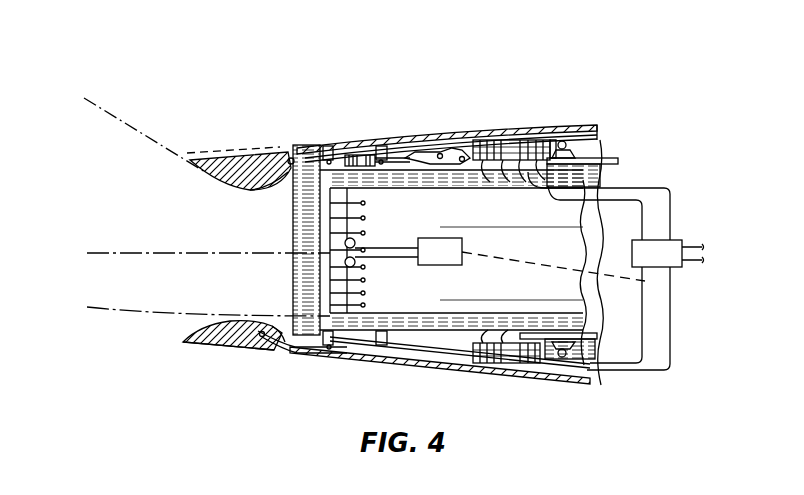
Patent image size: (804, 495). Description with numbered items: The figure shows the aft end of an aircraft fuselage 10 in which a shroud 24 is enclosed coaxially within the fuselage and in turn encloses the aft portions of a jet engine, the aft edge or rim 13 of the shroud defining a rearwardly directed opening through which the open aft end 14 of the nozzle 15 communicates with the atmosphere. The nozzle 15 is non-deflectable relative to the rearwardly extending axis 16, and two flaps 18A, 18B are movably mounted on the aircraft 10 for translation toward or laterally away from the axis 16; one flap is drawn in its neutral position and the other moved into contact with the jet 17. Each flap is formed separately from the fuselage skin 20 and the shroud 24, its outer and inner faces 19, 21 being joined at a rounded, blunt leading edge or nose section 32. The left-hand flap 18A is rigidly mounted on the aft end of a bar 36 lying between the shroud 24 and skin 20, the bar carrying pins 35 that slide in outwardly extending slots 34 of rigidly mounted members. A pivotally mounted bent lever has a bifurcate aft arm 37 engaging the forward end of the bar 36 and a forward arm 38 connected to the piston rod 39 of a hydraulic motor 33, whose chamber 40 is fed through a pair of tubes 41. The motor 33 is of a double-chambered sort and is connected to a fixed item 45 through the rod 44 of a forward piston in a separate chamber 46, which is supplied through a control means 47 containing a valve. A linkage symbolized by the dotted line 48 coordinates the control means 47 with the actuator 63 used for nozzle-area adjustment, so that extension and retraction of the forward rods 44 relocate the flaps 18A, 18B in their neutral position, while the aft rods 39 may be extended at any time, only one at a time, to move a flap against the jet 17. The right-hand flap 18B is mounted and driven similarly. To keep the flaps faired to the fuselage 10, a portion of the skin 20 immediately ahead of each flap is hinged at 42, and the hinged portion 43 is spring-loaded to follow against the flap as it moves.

The fuselage 10 is at (604, 92).
The aft edge or rim 13 is at (320, 206).
The open aft end of the nozzle 14 is at (326, 214).
The nozzle 15 is at (392, 293).
The rearwardly extending axis 16 is at (110, 252).
The jet 17 is at (118, 121).
The left-hand flap 18A is at (203, 178).
The right-hand flap 18B is at (200, 345).
The outer face of the flap 19 is at (233, 352).
The fuselage skin 20 is at (368, 367).
The inner face of the flap 21 is at (253, 193).
The shroud 24 is at (618, 163).
The leading edge or nose section 32 is at (283, 330).
The hydraulic motor 33 is at (490, 136).
The slots 34 is at (338, 150).
The pins 35 is at (390, 147).
The bar 36 is at (358, 167).
The bifurcate aft arm 37 is at (417, 166).
The forward arm 38 is at (440, 147).
The piston rod 39 is at (467, 137).
The chamber 40 is at (510, 143).
The tubes 41 is at (486, 166).
The hinge 42 is at (292, 358).
The hinged portion 43 is at (277, 357).
The forward piston rod 44 is at (553, 140).
The fixed item 45 is at (570, 147).
The forward chamber 46 is at (528, 140).
The control means 47 is at (673, 240).
The linkage 48 is at (538, 270).
The actuator 63 is at (446, 266).